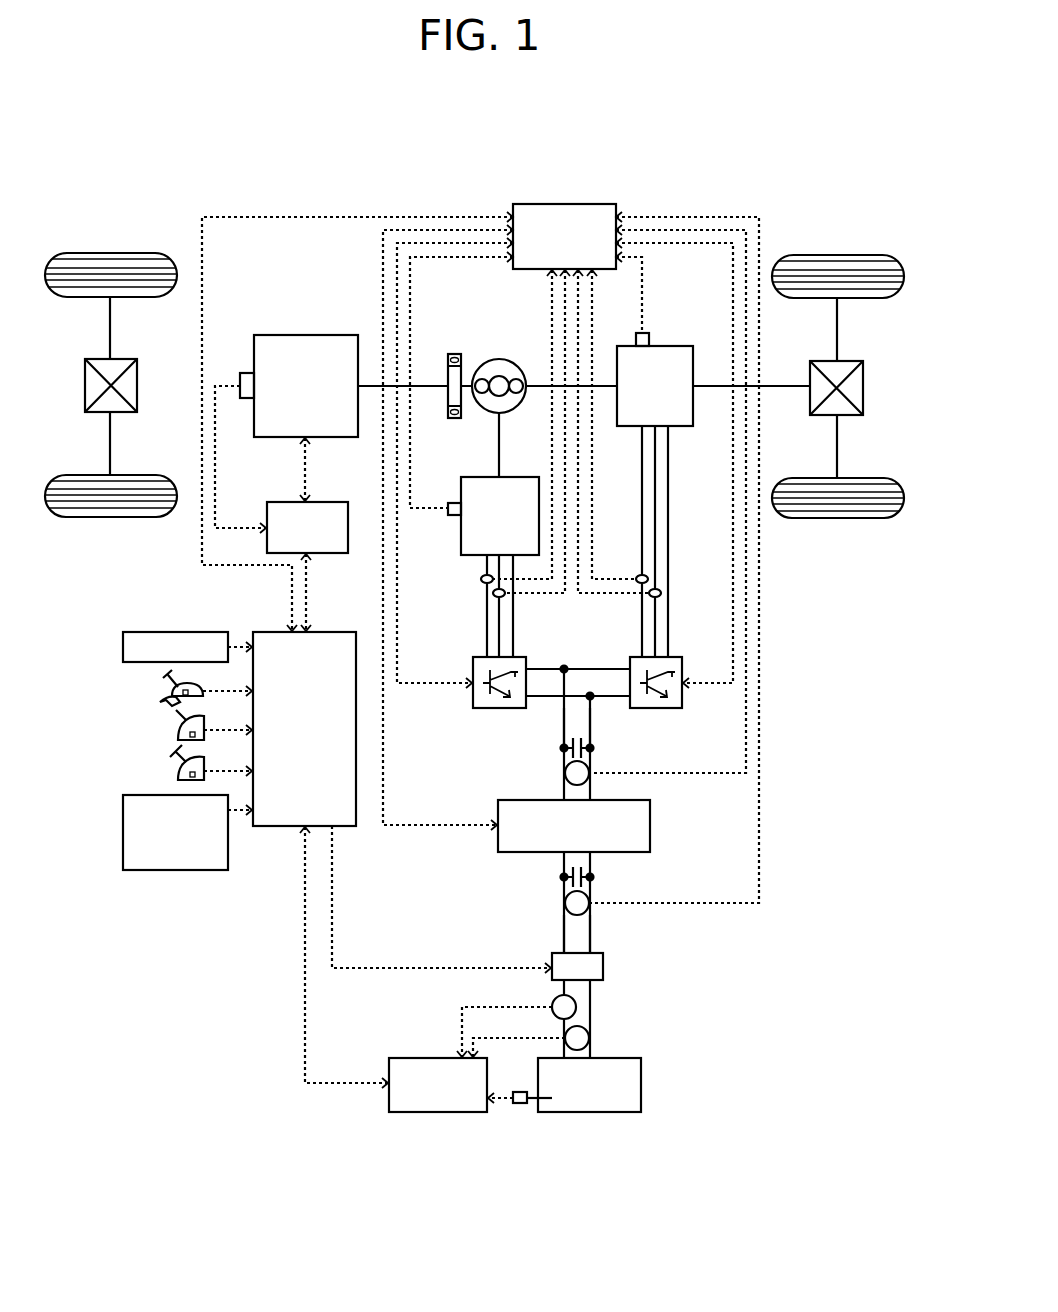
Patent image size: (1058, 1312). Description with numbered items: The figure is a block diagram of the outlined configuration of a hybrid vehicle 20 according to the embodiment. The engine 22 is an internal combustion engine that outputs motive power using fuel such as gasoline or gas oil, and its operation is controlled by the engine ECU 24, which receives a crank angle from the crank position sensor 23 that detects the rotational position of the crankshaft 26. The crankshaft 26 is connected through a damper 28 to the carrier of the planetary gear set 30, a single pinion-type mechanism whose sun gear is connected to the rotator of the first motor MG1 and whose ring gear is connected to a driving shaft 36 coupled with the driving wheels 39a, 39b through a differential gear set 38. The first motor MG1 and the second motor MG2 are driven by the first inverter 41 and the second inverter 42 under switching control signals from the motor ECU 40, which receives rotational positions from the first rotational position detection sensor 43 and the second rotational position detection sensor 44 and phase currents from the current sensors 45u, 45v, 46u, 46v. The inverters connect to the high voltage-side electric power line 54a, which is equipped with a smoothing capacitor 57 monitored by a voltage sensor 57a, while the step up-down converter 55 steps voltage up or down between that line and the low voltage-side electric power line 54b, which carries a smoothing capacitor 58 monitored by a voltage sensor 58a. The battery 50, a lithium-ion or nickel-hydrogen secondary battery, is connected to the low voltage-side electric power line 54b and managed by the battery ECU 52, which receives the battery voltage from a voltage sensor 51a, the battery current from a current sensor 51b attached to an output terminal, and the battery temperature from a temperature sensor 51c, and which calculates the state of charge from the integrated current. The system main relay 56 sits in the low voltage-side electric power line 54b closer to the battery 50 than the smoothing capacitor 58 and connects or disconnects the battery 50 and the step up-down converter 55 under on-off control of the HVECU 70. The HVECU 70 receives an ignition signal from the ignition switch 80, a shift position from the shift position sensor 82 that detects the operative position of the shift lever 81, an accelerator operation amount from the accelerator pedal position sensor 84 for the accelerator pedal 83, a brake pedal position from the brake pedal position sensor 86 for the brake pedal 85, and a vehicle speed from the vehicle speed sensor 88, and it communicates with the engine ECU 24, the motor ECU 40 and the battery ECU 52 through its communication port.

The hybrid vehicle 20 is at (692, 164).
The engine 22 is at (302, 335).
The crank position sensor 23 is at (246, 373).
The engine ECU 24 is at (322, 502).
The crankshaft 26 is at (428, 383).
The damper 28 is at (455, 354).
The planetary gear set 30 is at (500, 359).
The first motor MG1 is at (471, 477).
The second motor MG2 is at (684, 346).
The driving shaft 36 is at (779, 386).
The differential gear set 38 is at (851, 361).
The driving wheel 39a is at (838, 255).
The driving wheel 39b is at (838, 518).
The motor ECU 40 is at (562, 204).
The first inverter 41 is at (520, 657).
The second inverter 42 is at (676, 657).
The first rotational position detection sensor 43 is at (454, 516).
The second rotational position detection sensor 44 is at (646, 333).
The current sensor 45u is at (481, 579).
The current sensor 45v is at (493, 593).
The current sensor 46u is at (648, 579).
The current sensor 46v is at (661, 593).
The battery 50 is at (642, 1083).
The voltage sensor 51a is at (590, 1038).
The current sensor 51b is at (577, 1007).
The temperature sensor 51c is at (519, 1103).
The battery ECU 52 is at (435, 1058).
The high voltage-side electric power line 54a is at (590, 723).
The low voltage-side electric power line 54b is at (590, 926).
The step up-down converter 55 is at (651, 825).
The system main relay 56 is at (604, 968).
The smoothing capacitor 57 is at (593, 748).
The voltage sensor 57a is at (565, 773).
The smoothing capacitor 58 is at (593, 877).
The voltage sensor 58a is at (565, 903).
The HVECU 70 is at (328, 632).
The ignition switch 80 is at (123, 647).
The shift lever 81 is at (165, 676).
The shift position sensor 82 is at (172, 692).
The accelerator pedal 83 is at (165, 712).
The accelerator pedal position sensor 84 is at (178, 730).
The brake pedal 85 is at (170, 757).
The brake pedal position sensor 86 is at (178, 775).
The vehicle speed sensor 88 is at (123, 810).